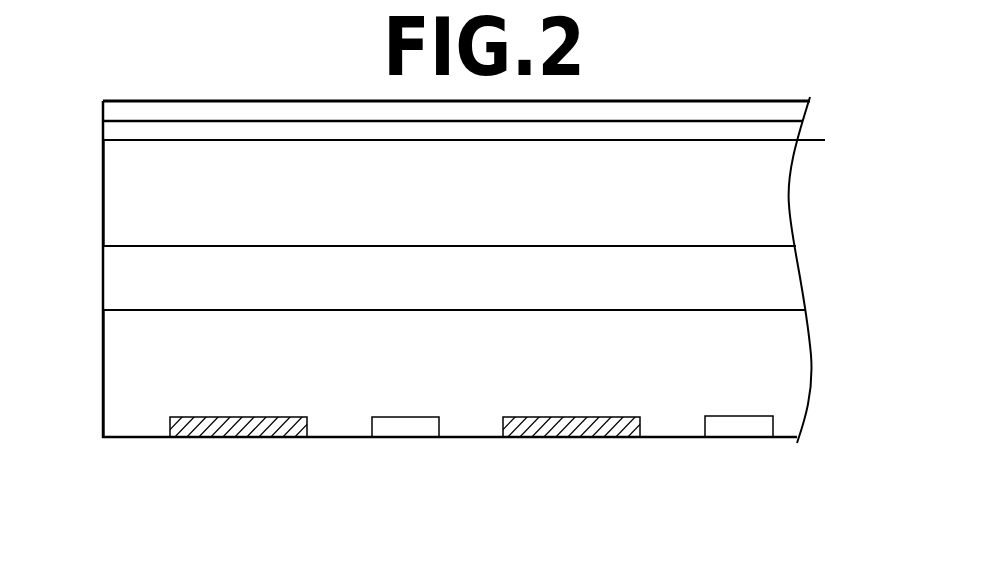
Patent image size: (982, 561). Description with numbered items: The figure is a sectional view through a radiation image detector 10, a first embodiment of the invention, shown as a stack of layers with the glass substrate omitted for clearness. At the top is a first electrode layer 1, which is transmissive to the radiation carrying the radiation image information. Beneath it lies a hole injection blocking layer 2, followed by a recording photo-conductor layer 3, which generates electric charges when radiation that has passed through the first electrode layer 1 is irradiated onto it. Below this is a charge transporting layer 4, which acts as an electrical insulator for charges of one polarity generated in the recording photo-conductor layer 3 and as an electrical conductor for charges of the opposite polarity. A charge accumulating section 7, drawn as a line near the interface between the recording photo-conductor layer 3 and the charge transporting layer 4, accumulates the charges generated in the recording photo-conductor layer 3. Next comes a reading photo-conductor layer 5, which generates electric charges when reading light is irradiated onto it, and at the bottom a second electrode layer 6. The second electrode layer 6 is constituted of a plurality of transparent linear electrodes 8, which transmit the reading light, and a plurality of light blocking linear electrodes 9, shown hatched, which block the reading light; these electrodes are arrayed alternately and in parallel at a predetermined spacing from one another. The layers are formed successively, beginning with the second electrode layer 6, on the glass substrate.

The first electrode layer 1 is at (106, 106).
The hole injection blocking layer 2 is at (106, 135).
The recording photo-conductor layer 3 is at (106, 173).
The charge transporting layer 4 is at (106, 279).
The reading photo-conductor layer 5 is at (106, 336).
The second electrode layer 6 is at (466, 447).
The charge accumulating section 7 is at (139, 246).
The transparent linear electrode 8 is at (572, 426).
The light blocking linear electrode 9 is at (205, 437).
The radiation image detector 10 is at (797, 73).